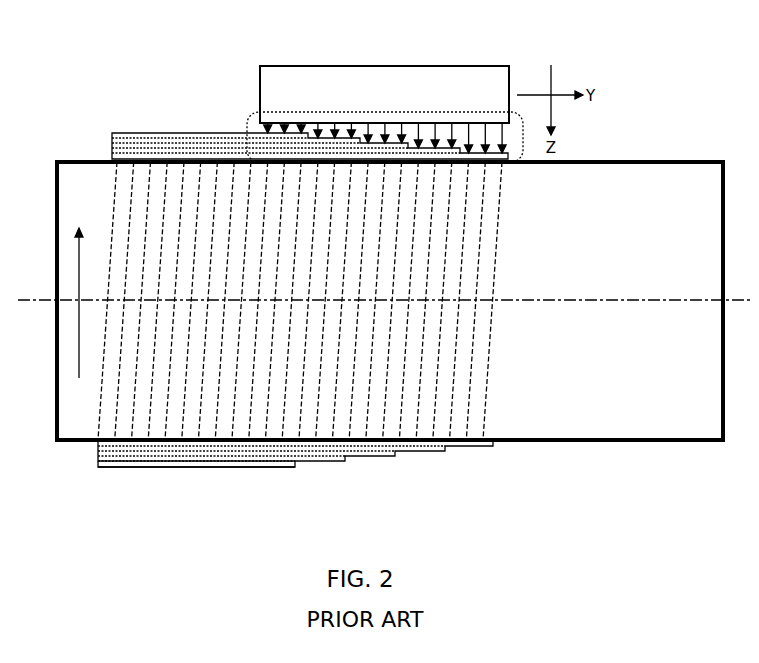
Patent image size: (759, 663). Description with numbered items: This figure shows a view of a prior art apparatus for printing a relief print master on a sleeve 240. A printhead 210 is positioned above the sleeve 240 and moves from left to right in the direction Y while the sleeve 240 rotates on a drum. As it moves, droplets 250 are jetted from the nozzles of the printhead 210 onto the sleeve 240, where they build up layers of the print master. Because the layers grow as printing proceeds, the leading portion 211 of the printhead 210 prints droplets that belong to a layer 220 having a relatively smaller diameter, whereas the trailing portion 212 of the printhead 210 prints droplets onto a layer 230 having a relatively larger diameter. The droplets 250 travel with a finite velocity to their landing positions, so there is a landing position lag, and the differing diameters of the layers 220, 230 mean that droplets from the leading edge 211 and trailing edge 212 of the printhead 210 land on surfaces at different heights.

The printhead 210 is at (373, 85).
The leading portion 211 is at (511, 87).
The trailing portion 212 is at (258, 89).
The layer 220 is at (473, 445).
The layer 230 is at (153, 463).
The sleeve 240 is at (633, 160).
The droplets 250 is at (253, 122).